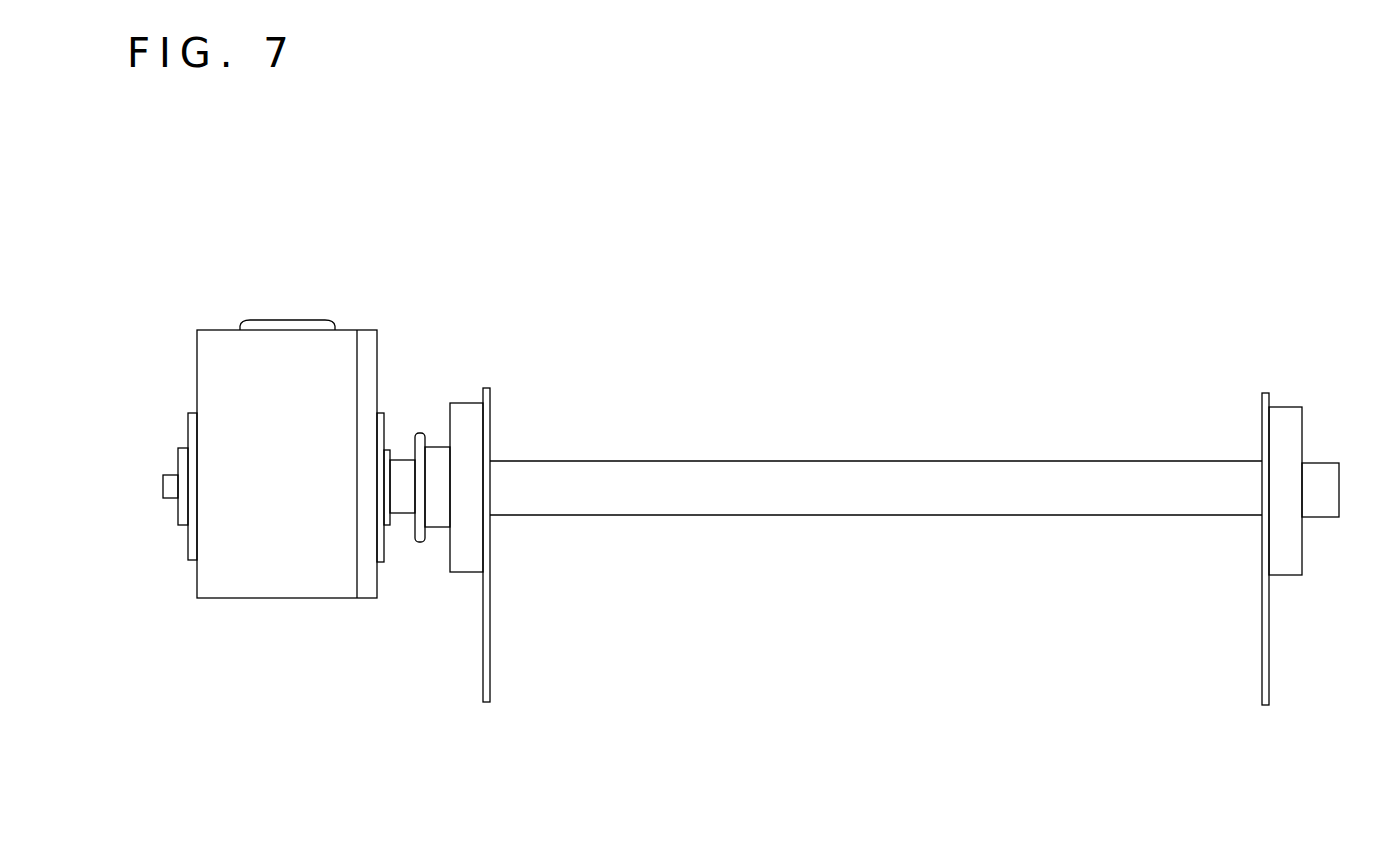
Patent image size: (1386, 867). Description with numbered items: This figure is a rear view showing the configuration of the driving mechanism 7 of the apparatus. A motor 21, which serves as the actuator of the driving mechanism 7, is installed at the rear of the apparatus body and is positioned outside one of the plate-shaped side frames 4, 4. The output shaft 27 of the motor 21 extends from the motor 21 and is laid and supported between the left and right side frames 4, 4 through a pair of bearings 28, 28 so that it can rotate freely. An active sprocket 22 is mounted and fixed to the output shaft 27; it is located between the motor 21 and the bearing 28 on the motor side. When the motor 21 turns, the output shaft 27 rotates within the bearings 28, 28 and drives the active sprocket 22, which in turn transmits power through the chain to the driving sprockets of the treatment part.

The driving mechanism 7 is at (316, 258).
The motor 21 is at (284, 598).
The active sprocket 22 is at (413, 533).
The output shaft 27 is at (889, 517).
The bearing 28 is at (472, 573).
The side frame 4 is at (483, 688).